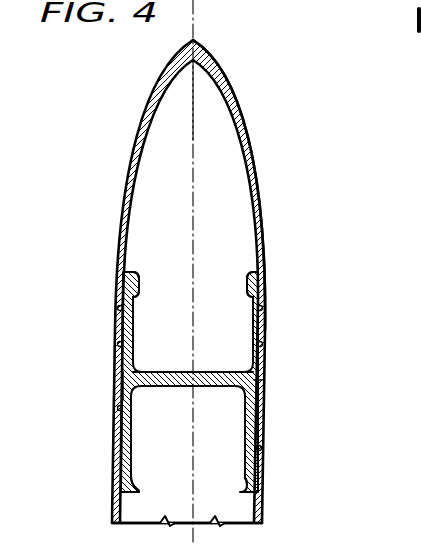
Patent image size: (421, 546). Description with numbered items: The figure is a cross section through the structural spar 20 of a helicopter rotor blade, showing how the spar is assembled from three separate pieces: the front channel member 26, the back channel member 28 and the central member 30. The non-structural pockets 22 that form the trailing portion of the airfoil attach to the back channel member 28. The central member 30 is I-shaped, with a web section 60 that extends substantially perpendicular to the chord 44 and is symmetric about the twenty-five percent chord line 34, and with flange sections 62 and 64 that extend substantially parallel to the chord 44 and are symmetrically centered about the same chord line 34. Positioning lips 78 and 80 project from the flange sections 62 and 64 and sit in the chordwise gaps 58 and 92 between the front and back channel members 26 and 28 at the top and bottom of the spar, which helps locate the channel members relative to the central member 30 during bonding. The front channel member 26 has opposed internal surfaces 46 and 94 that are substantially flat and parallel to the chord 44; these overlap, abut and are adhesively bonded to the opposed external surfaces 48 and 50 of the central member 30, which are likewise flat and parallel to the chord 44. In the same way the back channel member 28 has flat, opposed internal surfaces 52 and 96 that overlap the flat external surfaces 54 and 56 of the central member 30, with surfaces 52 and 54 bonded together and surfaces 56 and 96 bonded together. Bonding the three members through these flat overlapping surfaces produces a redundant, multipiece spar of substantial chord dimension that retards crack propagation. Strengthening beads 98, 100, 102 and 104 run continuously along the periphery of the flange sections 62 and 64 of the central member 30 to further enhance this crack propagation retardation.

The structural spar 20 is at (112, 87).
The non-structural pockets 22 is at (227, 261).
The front channel member 26 is at (236, 100).
The back channel member 28 is at (262, 514).
The central member 30 is at (262, 430).
The 25% chord line 34 is at (200, 373).
The chord 44 is at (193, 136).
The internal surface 46 is at (122, 328).
The external surface 48 is at (126, 304).
The external surface 50 is at (256, 304).
The internal surface 52 is at (121, 434).
The external surface 54 is at (127, 456).
The external surface 56 is at (250, 476).
The chordwise gap 58 is at (121, 380).
The web section 60 is at (165, 398).
The flange section 62 is at (128, 341).
The flange section 64 is at (264, 324).
The positioning lip 78 is at (121, 393).
The positioning lip 80 is at (263, 397).
The chordwise gap 92 is at (263, 387).
The internal surface 94 is at (263, 344).
The internal surface 96 is at (262, 452).
The strengthening bead 98 is at (132, 282).
The strengthening bead 100 is at (250, 282).
The strengthening bead 102 is at (131, 488).
The strengthening bead 104 is at (248, 488).